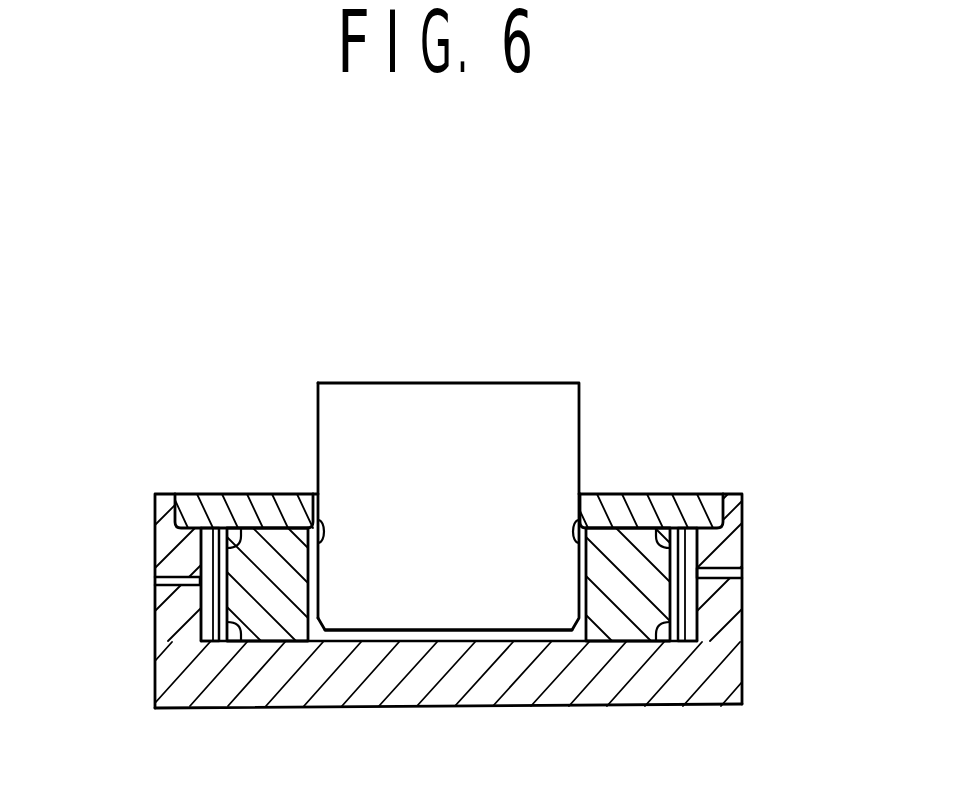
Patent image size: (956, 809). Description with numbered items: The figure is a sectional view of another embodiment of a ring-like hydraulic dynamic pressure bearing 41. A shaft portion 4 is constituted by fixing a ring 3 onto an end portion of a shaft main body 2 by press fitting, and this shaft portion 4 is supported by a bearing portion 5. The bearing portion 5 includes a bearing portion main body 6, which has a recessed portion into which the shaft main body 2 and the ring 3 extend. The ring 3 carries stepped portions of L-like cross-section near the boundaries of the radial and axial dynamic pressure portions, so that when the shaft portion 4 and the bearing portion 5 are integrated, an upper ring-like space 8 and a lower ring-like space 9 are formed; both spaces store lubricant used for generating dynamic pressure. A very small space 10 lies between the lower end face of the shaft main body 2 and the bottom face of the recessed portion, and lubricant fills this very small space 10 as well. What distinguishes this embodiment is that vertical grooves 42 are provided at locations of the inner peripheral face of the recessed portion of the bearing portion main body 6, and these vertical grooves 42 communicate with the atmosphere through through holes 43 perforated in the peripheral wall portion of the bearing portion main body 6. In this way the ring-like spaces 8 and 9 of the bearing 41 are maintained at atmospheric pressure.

The shaft main body 2 is at (457, 410).
The ring 3 is at (635, 593).
The shaft portion 4 is at (315, 407).
The bearing portion 5 is at (757, 508).
The bearing portion main body 6 is at (257, 693).
The ring-like space 8 is at (672, 528).
The ring-like space 9 is at (667, 640).
The very small space 10 is at (428, 635).
The ring-like hydraulic dynamic pressure bearing 41 is at (597, 297).
The vertical grooves 42 is at (212, 618).
The through holes 43 is at (176, 576).